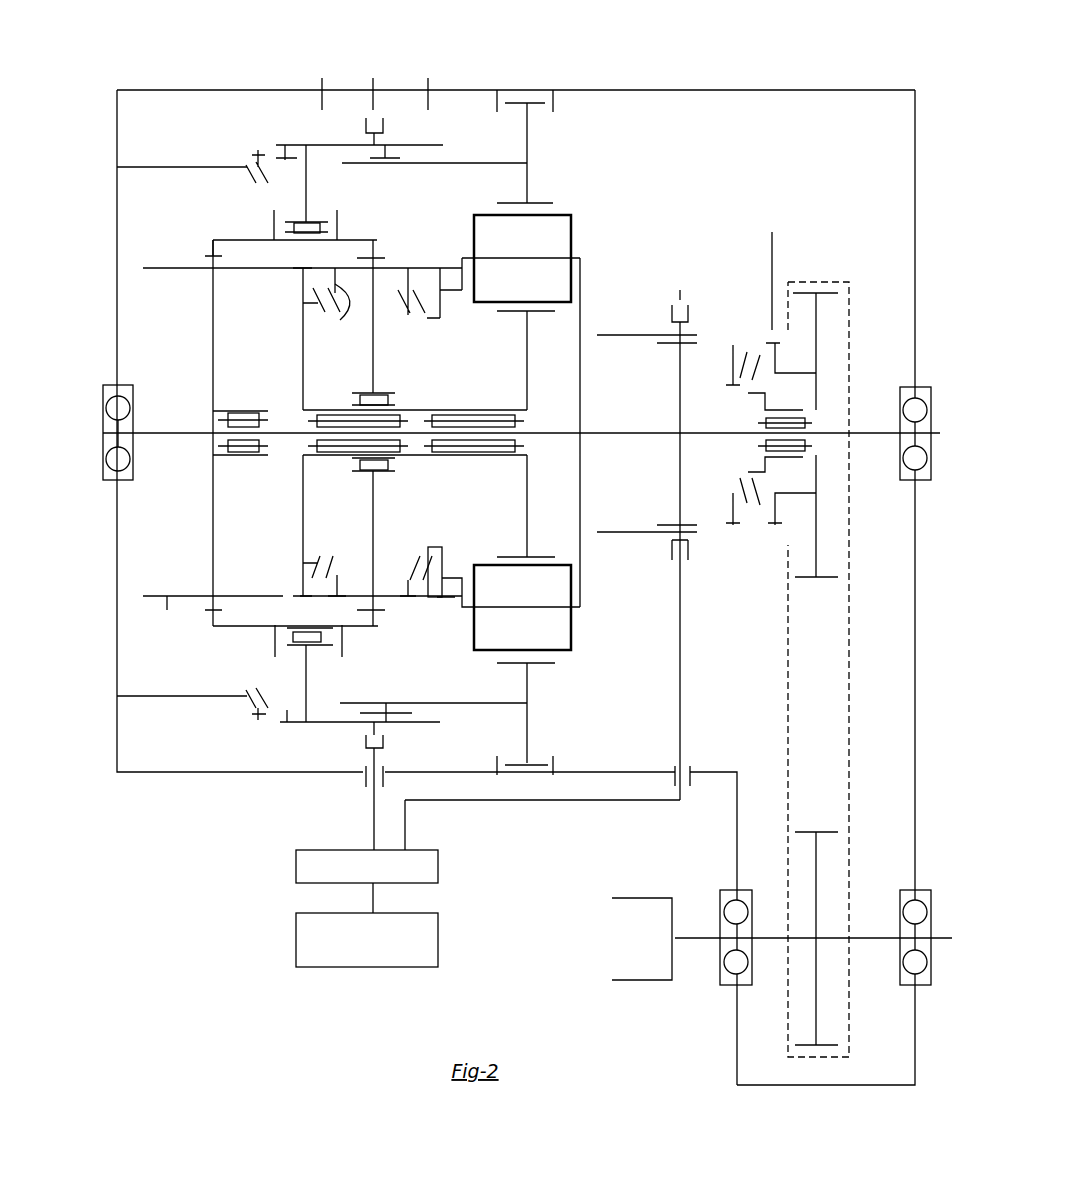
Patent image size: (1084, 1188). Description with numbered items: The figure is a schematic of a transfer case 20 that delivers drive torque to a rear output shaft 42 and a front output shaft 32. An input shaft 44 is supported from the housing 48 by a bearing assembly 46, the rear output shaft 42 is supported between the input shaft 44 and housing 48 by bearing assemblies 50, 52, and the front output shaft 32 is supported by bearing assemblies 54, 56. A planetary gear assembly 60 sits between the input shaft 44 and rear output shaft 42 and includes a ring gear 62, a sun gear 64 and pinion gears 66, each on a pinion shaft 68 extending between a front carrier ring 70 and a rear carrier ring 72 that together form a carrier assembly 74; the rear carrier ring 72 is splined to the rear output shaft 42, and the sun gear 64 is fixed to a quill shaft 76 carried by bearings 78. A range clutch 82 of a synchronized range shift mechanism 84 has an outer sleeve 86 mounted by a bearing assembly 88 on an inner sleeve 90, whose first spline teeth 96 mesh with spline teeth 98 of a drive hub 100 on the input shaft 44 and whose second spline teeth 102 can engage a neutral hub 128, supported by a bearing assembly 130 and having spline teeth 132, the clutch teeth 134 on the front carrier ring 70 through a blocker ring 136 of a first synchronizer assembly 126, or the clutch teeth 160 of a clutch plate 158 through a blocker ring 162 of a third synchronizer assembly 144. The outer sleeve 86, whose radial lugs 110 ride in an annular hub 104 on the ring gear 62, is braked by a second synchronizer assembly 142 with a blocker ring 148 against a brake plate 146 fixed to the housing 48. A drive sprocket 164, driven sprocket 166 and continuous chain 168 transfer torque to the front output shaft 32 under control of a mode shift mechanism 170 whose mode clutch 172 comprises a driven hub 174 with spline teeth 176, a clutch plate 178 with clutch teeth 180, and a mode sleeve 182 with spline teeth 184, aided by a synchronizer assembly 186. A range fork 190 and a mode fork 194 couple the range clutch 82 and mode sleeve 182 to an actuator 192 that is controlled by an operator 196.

The transfer case 20 is at (880, 80).
The front output shaft 32 is at (703, 937).
The rear output shaft 42 is at (938, 433).
The input shaft 44 is at (105, 428).
The bearing assembly 46 is at (112, 463).
The housing 48 is at (802, 90).
The bearing assembly 50 is at (252, 450).
The bearing assembly 52 is at (915, 465).
The bearing assembly 54 is at (725, 970).
The bearing assembly 56 is at (918, 970).
The planetary gear assembly 60 is at (580, 617).
The ring gear 62 is at (538, 203).
The sun gear 64 is at (527, 373).
The pinion gears 66 is at (560, 238).
The pinion shaft 68 is at (578, 258).
The front carrier ring 70 is at (455, 285).
The rear carrier ring 72 is at (580, 482).
The carrier assembly 74 is at (660, 198).
The quill shaft 76 is at (429, 410).
The bearings 78 is at (485, 450).
The range clutch 82 is at (222, 222).
The synchronized range shift mechanism 84 is at (378, 238).
The outer sleeve 86 is at (287, 723).
The bearing assembly 88 is at (318, 637).
The inner sleeve 90 is at (235, 627).
The first set of internal spline teeth 96 is at (215, 597).
The external spline teeth 98 is at (167, 598).
The drive hub 100 is at (213, 357).
The second set of internal spline teeth 102 is at (392, 600).
The annular hub 104 is at (458, 704).
The radial lugs 110 is at (308, 175).
The first synchronizer assembly 126 is at (435, 540).
The neutral hub 128 is at (373, 357).
The bearing assembly 130 is at (362, 398).
The external spline teeth 132 is at (390, 268).
The external clutch teeth 134 is at (440, 597).
The blocker ring 136 is at (395, 283).
The second synchronizer assembly 142 is at (215, 745).
The third synchronizer assembly 144 is at (323, 540).
The brake plate 146 is at (150, 167).
The blocker ring 148 is at (260, 160).
The clutch plate 158 is at (303, 357).
The external clutch teeth 160 is at (290, 603).
The blocker ring 162 is at (331, 314).
The drive sprocket 164 is at (817, 323).
The driven sprocket 166 is at (817, 867).
The continuous chain 168 is at (852, 758).
The mode shift mechanism 170 is at (650, 315).
The mode clutch 172 is at (665, 560).
The driven hub 174 is at (680, 385).
The external spline teeth 176 is at (672, 542).
The clutch plate 178 is at (790, 493).
The external clutch teeth 180 is at (773, 343).
The mode sleeve 182 is at (683, 542).
The internal spline teeth 184 is at (672, 528).
The synchronizer assembly 186 is at (720, 360).
The range fork 190 is at (374, 823).
The actuator 192 is at (295, 882).
The mode fork 194 is at (678, 673).
The operator 196 is at (296, 953).